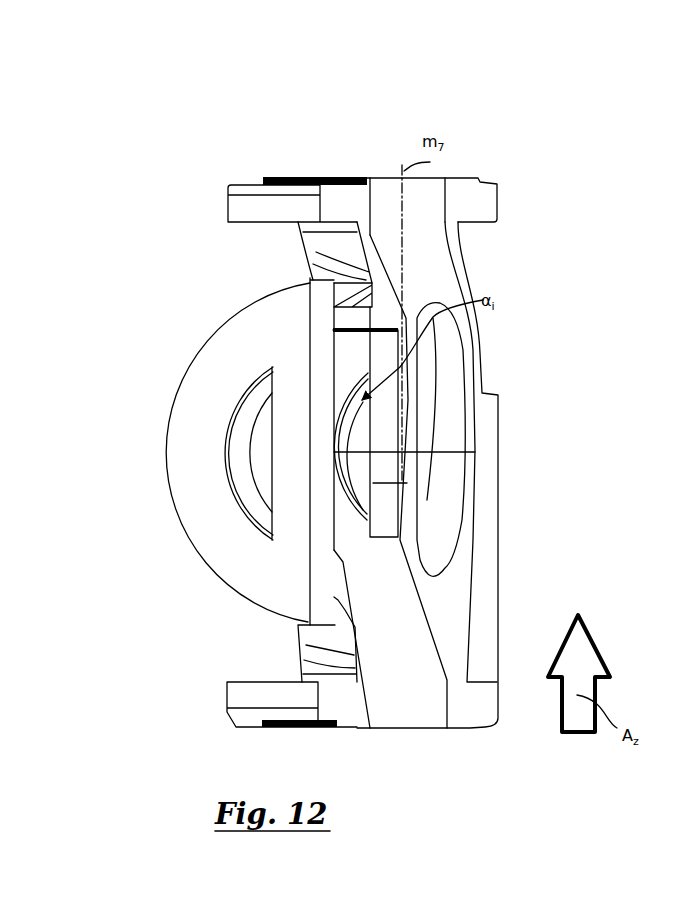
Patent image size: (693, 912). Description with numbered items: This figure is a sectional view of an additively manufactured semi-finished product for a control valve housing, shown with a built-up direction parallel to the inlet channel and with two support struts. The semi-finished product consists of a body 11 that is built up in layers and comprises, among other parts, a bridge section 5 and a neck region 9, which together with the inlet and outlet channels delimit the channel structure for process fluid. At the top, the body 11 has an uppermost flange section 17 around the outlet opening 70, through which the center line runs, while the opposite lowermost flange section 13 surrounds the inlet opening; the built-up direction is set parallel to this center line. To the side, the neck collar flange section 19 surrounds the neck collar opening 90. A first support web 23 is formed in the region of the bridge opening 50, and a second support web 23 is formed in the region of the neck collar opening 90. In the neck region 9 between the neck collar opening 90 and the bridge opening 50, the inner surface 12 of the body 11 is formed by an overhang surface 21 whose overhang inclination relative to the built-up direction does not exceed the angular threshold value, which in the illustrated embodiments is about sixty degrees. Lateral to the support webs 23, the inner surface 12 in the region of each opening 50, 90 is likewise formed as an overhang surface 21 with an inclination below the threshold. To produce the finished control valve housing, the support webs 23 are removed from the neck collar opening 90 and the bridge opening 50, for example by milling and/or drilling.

The bridge section 5 is at (407, 523).
The neck region 9 is at (332, 315).
The body 11 is at (490, 427).
The inner surface 12 is at (258, 395).
The lowermost flange section 13 is at (483, 703).
The uppermost flange section 17 is at (486, 205).
The neck collar flange section 19 is at (213, 338).
The overhang surface 21 is at (363, 380).
The support web 23 is at (320, 473).
The bridge opening 50 is at (343, 437).
The outlet opening 70 is at (392, 168).
The neck collar opening 90 is at (250, 420).